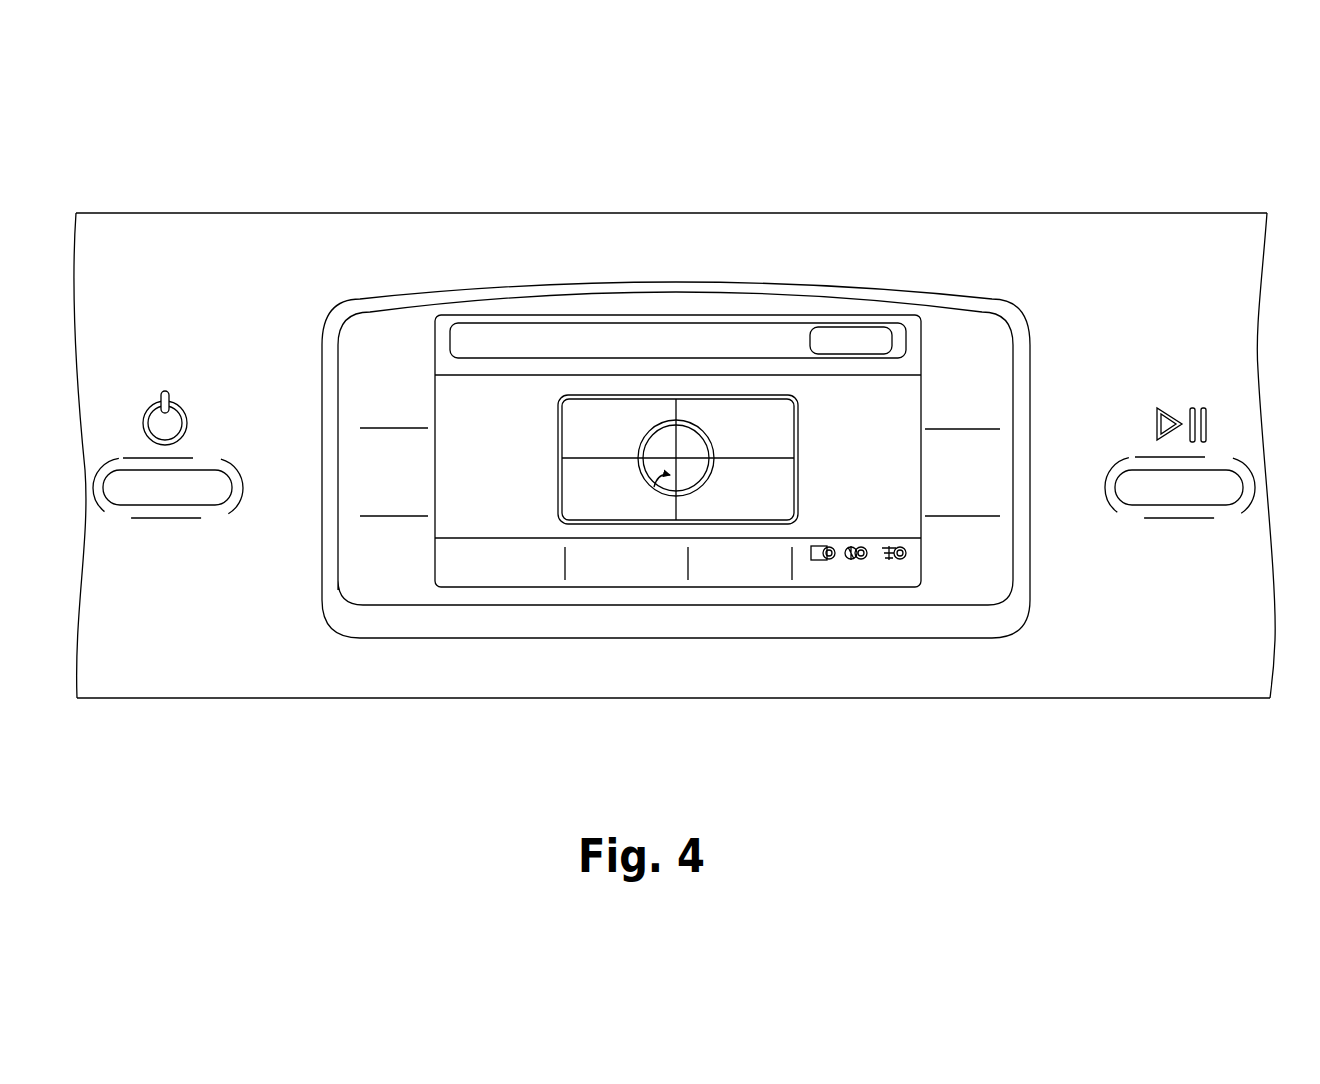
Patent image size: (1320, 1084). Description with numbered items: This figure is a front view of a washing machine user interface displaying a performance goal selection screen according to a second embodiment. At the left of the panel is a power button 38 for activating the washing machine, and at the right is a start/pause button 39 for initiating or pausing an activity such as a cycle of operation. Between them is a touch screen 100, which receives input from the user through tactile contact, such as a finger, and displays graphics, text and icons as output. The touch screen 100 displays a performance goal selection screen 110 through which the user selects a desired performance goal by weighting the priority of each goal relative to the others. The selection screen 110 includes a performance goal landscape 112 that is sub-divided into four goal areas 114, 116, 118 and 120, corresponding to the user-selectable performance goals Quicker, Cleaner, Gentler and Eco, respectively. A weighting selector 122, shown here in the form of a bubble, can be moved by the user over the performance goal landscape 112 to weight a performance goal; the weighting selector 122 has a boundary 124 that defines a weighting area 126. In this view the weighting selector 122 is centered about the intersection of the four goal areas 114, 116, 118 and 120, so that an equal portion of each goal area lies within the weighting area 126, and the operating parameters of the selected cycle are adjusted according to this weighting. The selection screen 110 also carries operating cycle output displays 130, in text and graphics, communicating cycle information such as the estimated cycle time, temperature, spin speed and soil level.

The touch screen 100 is at (902, 286).
The performance goal selection screen 110 is at (577, 315).
The performance goal landscape 112 is at (724, 390).
The goal area 114 is at (573, 410).
The goal area 116 is at (763, 410).
The goal area 118 is at (598, 507).
The goal area 120 is at (773, 500).
The weighting selector 122 is at (668, 413).
The boundary 124 is at (655, 423).
The weighting area 126 is at (653, 478).
The operating cycle output displays 130 is at (445, 441).
The power button 38 is at (170, 493).
The start/pause button 39 is at (1157, 497).